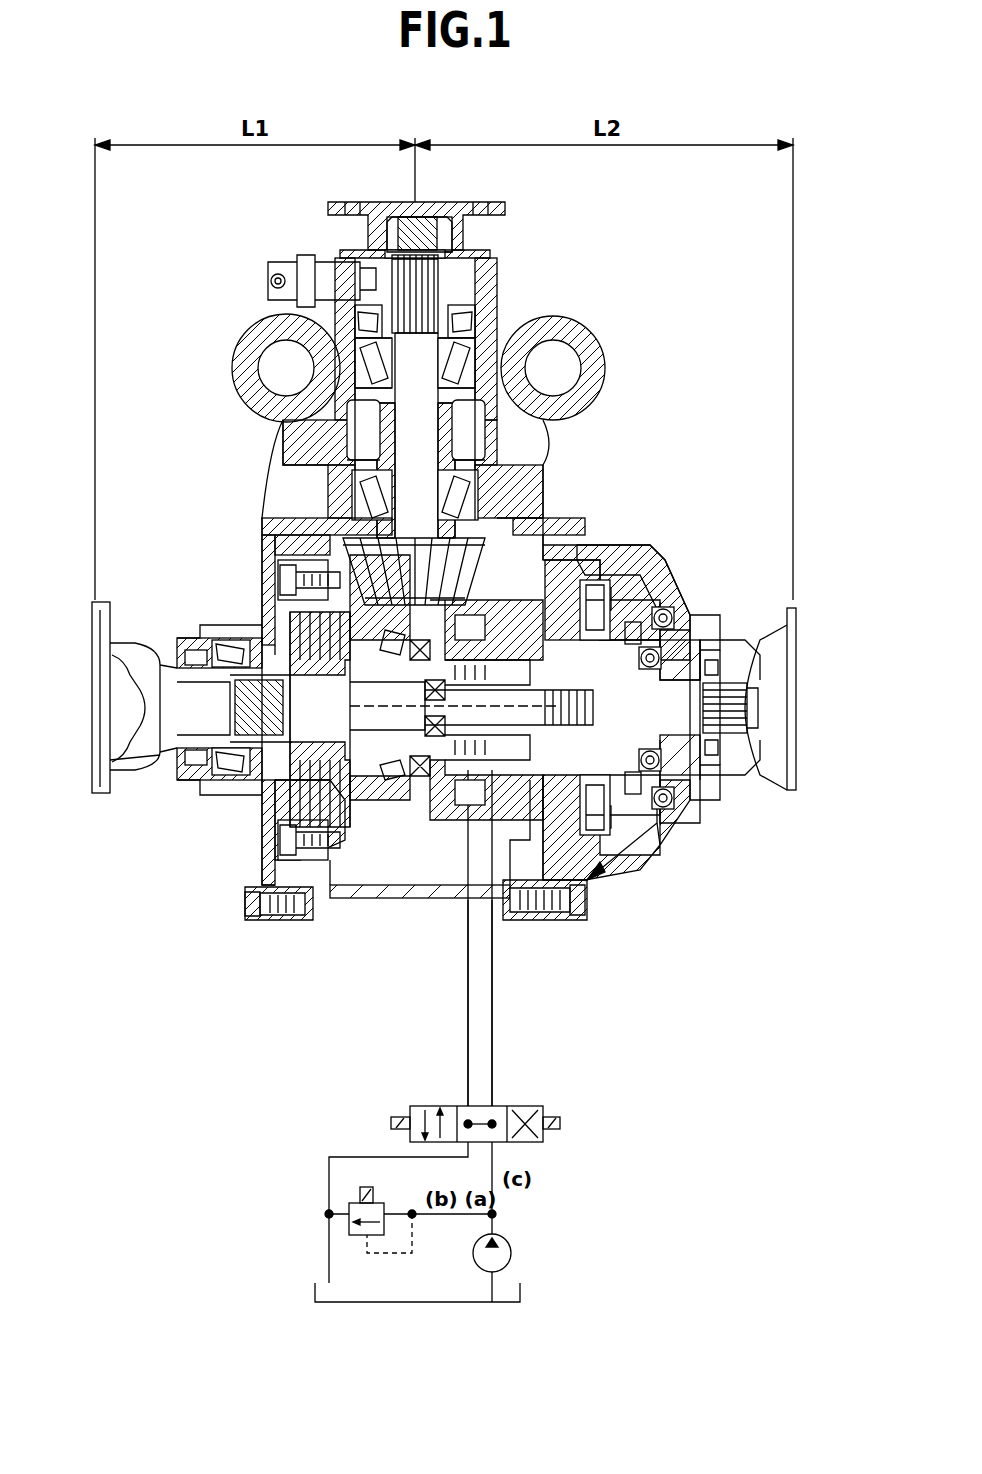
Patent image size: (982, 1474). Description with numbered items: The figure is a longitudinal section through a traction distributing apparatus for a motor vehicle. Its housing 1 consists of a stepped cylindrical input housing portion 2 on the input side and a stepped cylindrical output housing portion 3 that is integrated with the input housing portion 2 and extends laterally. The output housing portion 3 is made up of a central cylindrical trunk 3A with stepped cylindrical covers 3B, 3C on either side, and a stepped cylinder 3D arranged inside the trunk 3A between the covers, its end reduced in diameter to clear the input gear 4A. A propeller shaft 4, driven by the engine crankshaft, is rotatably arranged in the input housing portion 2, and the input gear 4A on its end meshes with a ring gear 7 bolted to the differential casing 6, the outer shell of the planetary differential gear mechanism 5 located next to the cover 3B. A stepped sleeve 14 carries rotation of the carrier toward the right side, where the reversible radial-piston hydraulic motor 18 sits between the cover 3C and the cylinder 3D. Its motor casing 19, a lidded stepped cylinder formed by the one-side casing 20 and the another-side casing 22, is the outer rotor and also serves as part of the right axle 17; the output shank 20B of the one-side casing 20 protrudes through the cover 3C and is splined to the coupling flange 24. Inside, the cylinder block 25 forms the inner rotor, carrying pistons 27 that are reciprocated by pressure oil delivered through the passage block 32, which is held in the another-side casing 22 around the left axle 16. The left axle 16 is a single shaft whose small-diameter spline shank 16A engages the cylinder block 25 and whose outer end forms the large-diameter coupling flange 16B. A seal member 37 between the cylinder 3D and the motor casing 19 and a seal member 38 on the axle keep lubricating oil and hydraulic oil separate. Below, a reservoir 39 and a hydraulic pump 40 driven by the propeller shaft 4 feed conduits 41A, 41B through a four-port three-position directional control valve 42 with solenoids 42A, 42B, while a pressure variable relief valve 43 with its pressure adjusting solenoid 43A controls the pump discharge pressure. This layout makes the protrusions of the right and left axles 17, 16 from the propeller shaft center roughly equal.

The housing 1 is at (238, 333).
The input housing portion 2 is at (388, 360).
The output housing portion 3 is at (443, 786).
The cylindrical trunk 3A is at (388, 897).
The cover 3B is at (205, 630).
The cover 3C is at (600, 880).
The stepped cylinder 3D is at (505, 880).
The propeller shaft 4 is at (395, 283).
The input gear 4A is at (490, 540).
The differential gear mechanism 5 is at (330, 897).
The differential casing 6 is at (270, 815).
The ring gear 7 is at (310, 520).
The stepped sleeve 14 is at (372, 770).
The left axle 16 is at (163, 702).
The spline shank 16A is at (692, 745).
The coupling flange 16B is at (145, 775).
The right axle 17 is at (772, 705).
The hydraulic motor 18 is at (640, 860).
The motor casing 19 is at (655, 565).
The one-side casing 20 is at (655, 605).
The output shank 20B is at (715, 665).
The another-side casing 22 is at (565, 575).
The coupling flange 24 is at (745, 790).
The cylinder block 25 is at (700, 630).
The piston 27 is at (605, 600).
The passage block 32 is at (452, 780).
The seal member 37 is at (432, 790).
The seal member 38 is at (455, 620).
The reservoir 39 is at (315, 1290).
The hydraulic pump 40 is at (512, 1254).
The conduit 41A is at (500, 1030).
The conduit 41B is at (458, 1030).
The directional control valve 42 is at (495, 1095).
The solenoid 42A is at (562, 1124).
The solenoid 42B is at (395, 1115).
The pressure variable relief valve 43 is at (375, 1177).
The pressure adjusting solenoid 43A is at (365, 1185).